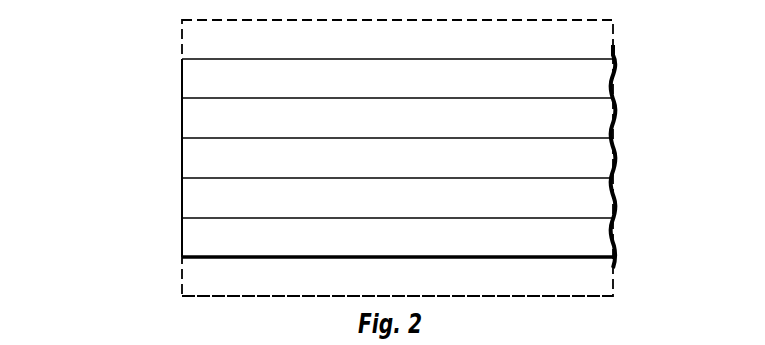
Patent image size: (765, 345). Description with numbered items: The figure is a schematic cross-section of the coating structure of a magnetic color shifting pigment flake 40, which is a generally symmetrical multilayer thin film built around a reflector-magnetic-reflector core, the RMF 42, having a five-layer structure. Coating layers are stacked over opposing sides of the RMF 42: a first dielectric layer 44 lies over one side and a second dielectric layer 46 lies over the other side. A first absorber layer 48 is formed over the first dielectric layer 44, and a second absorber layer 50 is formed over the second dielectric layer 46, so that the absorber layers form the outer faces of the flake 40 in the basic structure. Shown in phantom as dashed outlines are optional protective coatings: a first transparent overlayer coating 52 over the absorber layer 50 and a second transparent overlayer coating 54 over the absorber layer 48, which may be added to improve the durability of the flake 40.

The magnetic color shifting pigment flake 40 is at (130, 76).
The RMF 42 is at (597, 161).
The first dielectric layer 44 is at (597, 122).
The second dielectric layer 46 is at (597, 201).
The first absorber layer 48 is at (597, 83).
The second absorber layer 50 is at (597, 241).
The first transparent overlayer coating 52 is at (588, 275).
The second transparent overlayer coating 54 is at (588, 38).